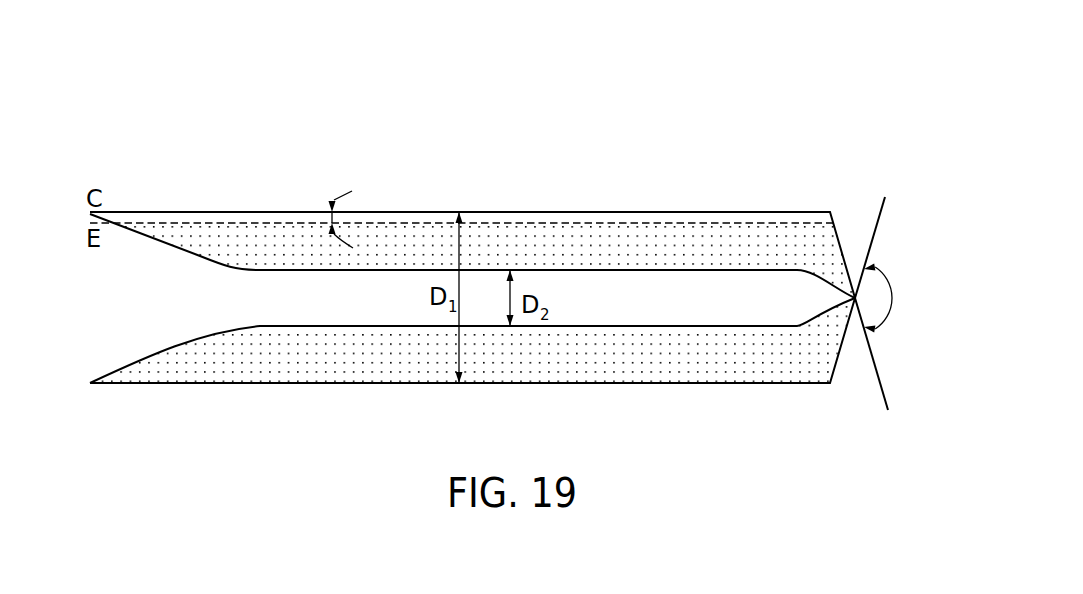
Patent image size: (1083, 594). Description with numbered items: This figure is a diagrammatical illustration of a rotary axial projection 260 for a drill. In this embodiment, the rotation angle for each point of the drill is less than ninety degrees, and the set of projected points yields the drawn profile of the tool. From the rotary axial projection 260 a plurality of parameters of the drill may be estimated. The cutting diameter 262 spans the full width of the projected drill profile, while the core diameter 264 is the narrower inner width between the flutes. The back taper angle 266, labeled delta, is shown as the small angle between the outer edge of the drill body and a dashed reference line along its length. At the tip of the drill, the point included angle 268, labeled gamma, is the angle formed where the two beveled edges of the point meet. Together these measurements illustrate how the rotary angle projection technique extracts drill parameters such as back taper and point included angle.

The rotary axial projection 260 is at (794, 78).
The cutting diameter (D1) 262 is at (458, 285).
The core diameter (D2) 264 is at (512, 290).
The back taper angle (δ) 266 is at (340, 191).
The point included angle (γ) 268 is at (876, 266).